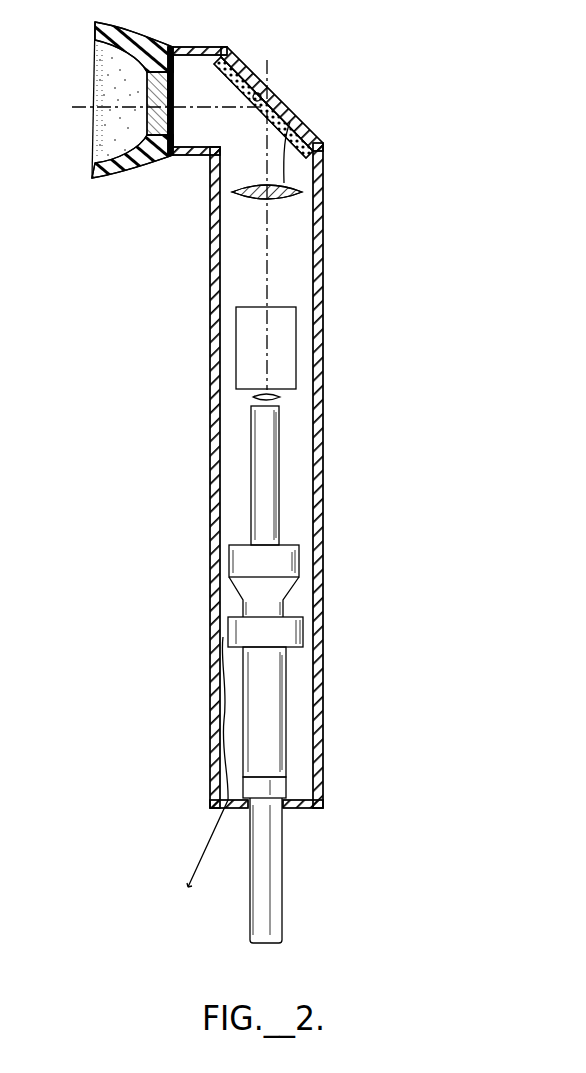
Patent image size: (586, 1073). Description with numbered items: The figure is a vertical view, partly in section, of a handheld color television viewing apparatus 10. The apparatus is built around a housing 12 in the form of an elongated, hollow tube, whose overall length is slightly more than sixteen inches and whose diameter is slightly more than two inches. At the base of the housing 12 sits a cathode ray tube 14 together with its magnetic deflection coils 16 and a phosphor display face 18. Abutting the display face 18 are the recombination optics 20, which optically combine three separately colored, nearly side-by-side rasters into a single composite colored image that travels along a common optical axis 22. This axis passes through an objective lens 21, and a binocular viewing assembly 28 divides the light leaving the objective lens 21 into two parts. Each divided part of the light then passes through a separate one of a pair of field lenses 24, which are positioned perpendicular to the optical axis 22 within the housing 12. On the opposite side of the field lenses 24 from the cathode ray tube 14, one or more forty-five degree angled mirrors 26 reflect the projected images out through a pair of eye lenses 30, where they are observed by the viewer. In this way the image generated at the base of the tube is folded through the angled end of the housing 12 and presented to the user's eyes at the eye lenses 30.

The handheld television viewing apparatus 10 is at (328, 259).
The housing 12 is at (322, 299).
The cathode ray tube 14 is at (280, 717).
The magnetic deflection coils 16 is at (302, 630).
The phosphor display face 18 is at (294, 545).
The recombination optics 20 is at (275, 457).
The objective lens 21 is at (279, 397).
The optical axis 22 is at (272, 226).
The field lenses 24 is at (290, 122).
The 45° angled mirrors 26 is at (258, 96).
The binocular viewing assembly 28 is at (286, 327).
The eye lenses 30 is at (147, 118).